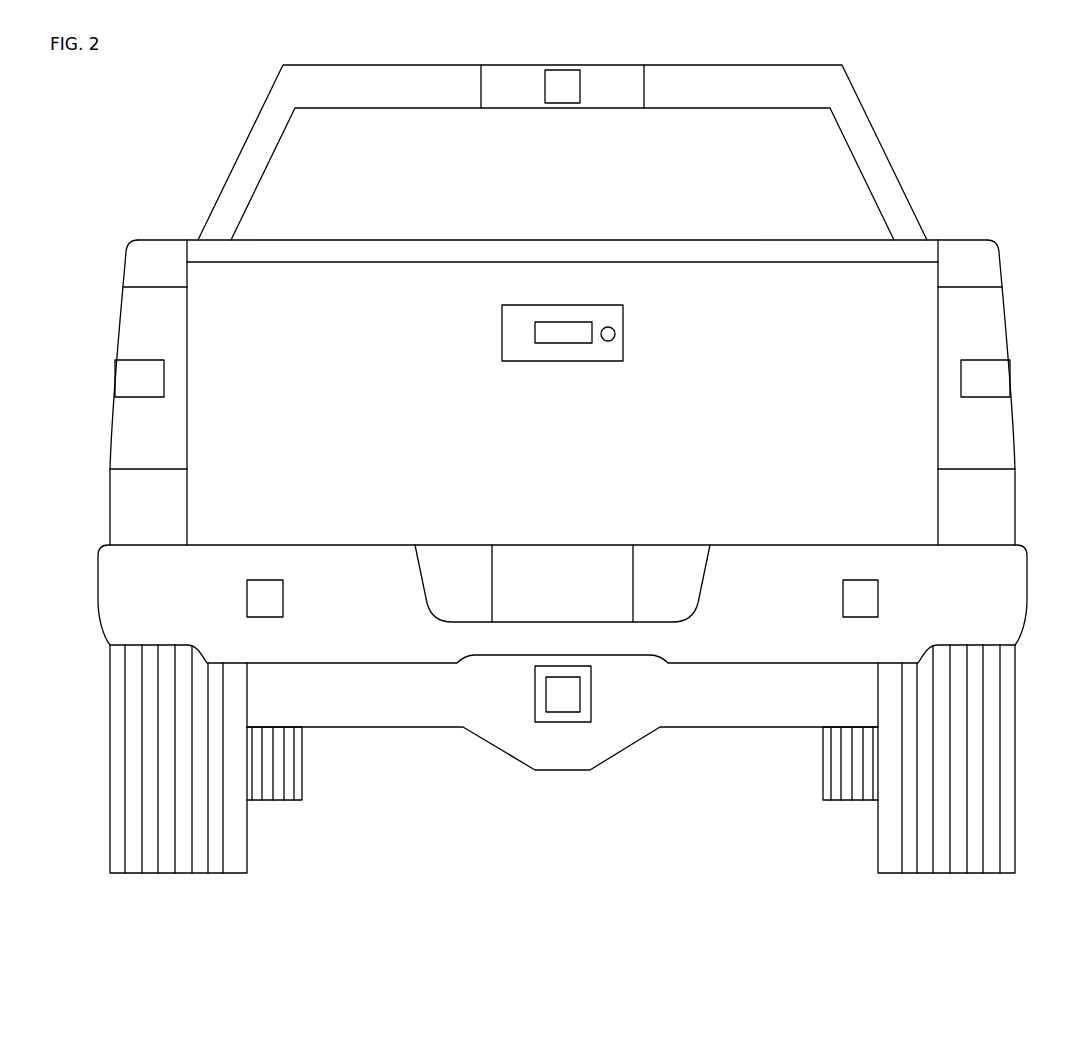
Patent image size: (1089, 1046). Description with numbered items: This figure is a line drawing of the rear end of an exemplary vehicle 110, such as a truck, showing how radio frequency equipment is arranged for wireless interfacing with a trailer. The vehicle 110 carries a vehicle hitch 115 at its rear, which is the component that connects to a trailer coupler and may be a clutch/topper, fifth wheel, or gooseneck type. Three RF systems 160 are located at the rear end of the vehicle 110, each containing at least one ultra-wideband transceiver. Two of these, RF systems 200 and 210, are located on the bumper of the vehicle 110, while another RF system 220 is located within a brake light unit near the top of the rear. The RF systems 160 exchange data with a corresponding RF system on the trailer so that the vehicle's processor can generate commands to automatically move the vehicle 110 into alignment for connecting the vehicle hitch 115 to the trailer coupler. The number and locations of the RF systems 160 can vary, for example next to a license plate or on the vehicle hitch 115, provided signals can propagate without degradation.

The vehicle 110 is at (774, 65).
The vehicle hitch 115 is at (594, 702).
The RF system 160 is at (562, 324).
The RF system 200 is at (254, 580).
The RF system 210 is at (851, 580).
The RF system 220 is at (560, 70).